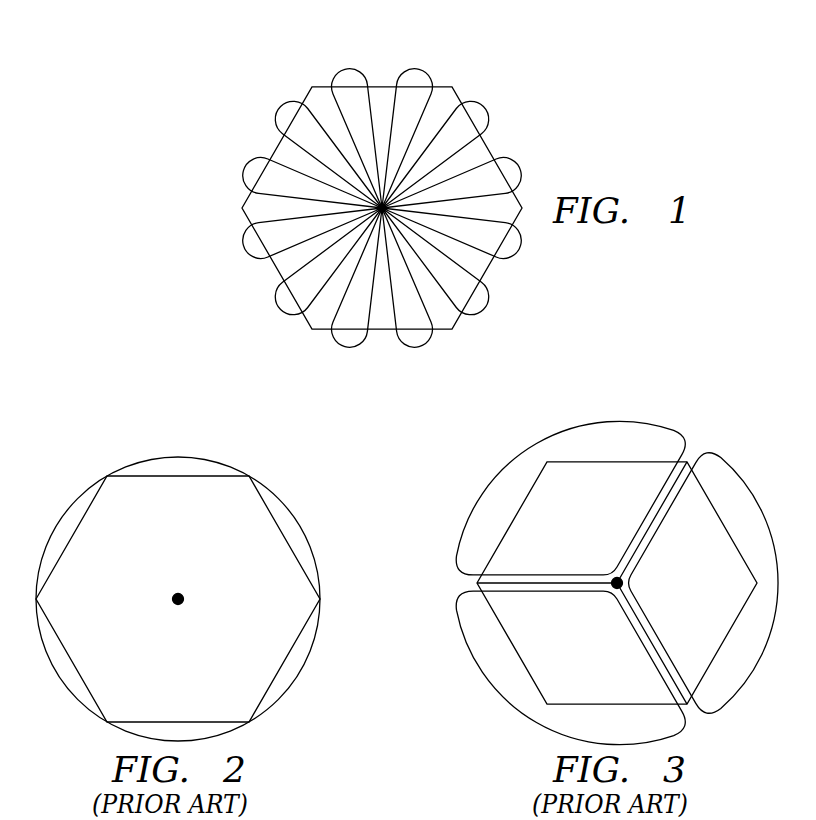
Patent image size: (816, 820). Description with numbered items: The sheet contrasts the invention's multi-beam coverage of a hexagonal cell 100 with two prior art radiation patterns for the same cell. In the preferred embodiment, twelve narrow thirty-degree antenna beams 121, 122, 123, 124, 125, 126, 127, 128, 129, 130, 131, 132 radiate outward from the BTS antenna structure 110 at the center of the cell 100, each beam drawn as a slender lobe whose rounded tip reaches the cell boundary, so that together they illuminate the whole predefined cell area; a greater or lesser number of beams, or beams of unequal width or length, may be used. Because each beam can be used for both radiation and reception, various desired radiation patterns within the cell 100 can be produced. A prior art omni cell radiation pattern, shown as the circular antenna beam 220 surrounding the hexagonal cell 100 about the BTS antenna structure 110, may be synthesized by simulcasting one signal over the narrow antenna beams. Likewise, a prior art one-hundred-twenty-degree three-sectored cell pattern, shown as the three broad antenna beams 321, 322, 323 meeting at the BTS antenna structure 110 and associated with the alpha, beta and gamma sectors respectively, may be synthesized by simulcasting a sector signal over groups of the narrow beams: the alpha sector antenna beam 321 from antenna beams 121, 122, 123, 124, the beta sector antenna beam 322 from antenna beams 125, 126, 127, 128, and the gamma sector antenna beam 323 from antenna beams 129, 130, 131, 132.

In FIG. 1, the cell 100 is at (386, 86).
In FIG. 2, the cell 100 is at (140, 476).
In FIG. 3, the cell 100 is at (591, 704).
In FIG. 1, the BTS antenna structure 110 is at (383, 328).
In FIG. 2, the BTS antenna structure 110 is at (176, 596).
In FIG. 3, the BTS antenna structure 110 is at (613, 579).
In FIG. 1, the antenna beam 121 is at (480, 104).
In FIG. 1, the antenna beam 122 is at (513, 163).
In FIG. 1, the antenna beam 123 is at (513, 254).
In FIG. 1, the antenna beam 124 is at (480, 312).
In FIG. 1, the antenna beam 125 is at (420, 346).
In FIG. 1, the antenna beam 126 is at (344, 346).
In FIG. 1, the antenna beam 127 is at (284, 312).
In FIG. 1, the antenna beam 128 is at (250, 254).
In FIG. 1, the antenna beam 129 is at (250, 163).
In FIG. 1, the antenna beam 130 is at (284, 104).
In FIG. 1, the antenna beam 131 is at (344, 70).
In FIG. 1, the antenna beam 132 is at (420, 70).
In FIG. 2, the antenna beam 220 is at (72, 500).
In FIG. 3, the antenna beam 321 is at (752, 486).
In FIG. 3, the antenna beam 322 is at (486, 690).
In FIG. 3, the antenna beam 323 is at (535, 438).